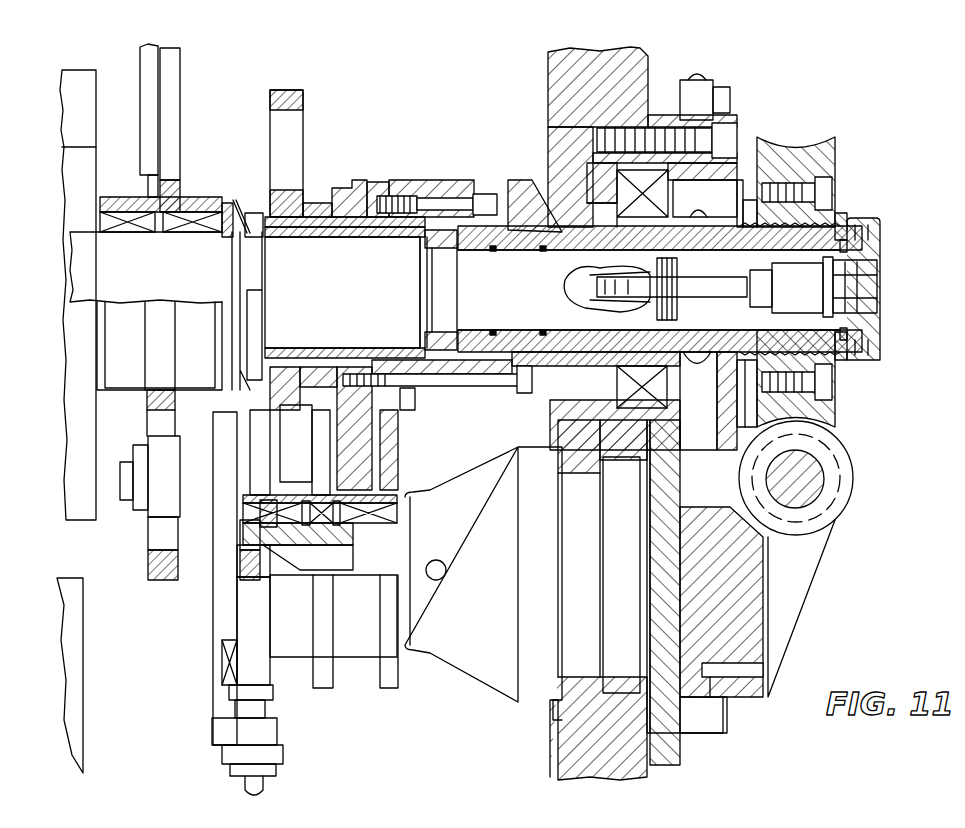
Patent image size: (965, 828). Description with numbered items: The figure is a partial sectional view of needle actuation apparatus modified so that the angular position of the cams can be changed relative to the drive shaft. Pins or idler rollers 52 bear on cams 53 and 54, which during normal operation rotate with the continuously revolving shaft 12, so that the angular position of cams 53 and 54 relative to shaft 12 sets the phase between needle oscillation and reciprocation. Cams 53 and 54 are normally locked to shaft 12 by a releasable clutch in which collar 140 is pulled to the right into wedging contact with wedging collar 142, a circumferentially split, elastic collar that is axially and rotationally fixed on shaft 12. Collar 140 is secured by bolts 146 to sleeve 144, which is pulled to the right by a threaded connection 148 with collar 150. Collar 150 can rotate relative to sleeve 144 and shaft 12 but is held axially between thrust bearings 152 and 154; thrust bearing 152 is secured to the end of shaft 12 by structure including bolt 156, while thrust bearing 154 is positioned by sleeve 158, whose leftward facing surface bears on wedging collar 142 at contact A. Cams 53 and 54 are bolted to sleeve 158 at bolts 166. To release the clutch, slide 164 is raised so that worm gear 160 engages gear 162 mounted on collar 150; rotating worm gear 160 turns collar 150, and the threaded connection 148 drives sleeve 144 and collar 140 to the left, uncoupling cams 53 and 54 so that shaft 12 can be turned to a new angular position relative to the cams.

The shaft 12 is at (85, 258).
The pins or idler rollers 52 is at (287, 420).
The cam 53 is at (296, 92).
The cam 54 is at (350, 184).
The collar 140 is at (305, 222).
The wedging collar 142 is at (378, 244).
The sleeve 144 is at (527, 228).
The bolts 146 is at (433, 205).
The threaded connection 148 is at (840, 235).
The collar 150 is at (847, 360).
The thrust bearing 152 is at (873, 212).
The thrust bearing 154 is at (770, 400).
The bolt 156 is at (877, 290).
The sleeve 158 is at (505, 398).
The worm gear 160 is at (840, 481).
The gear 162 is at (835, 156).
The slide 164 is at (750, 620).
The bolts 166 is at (461, 398).
The contact A is at (423, 398).